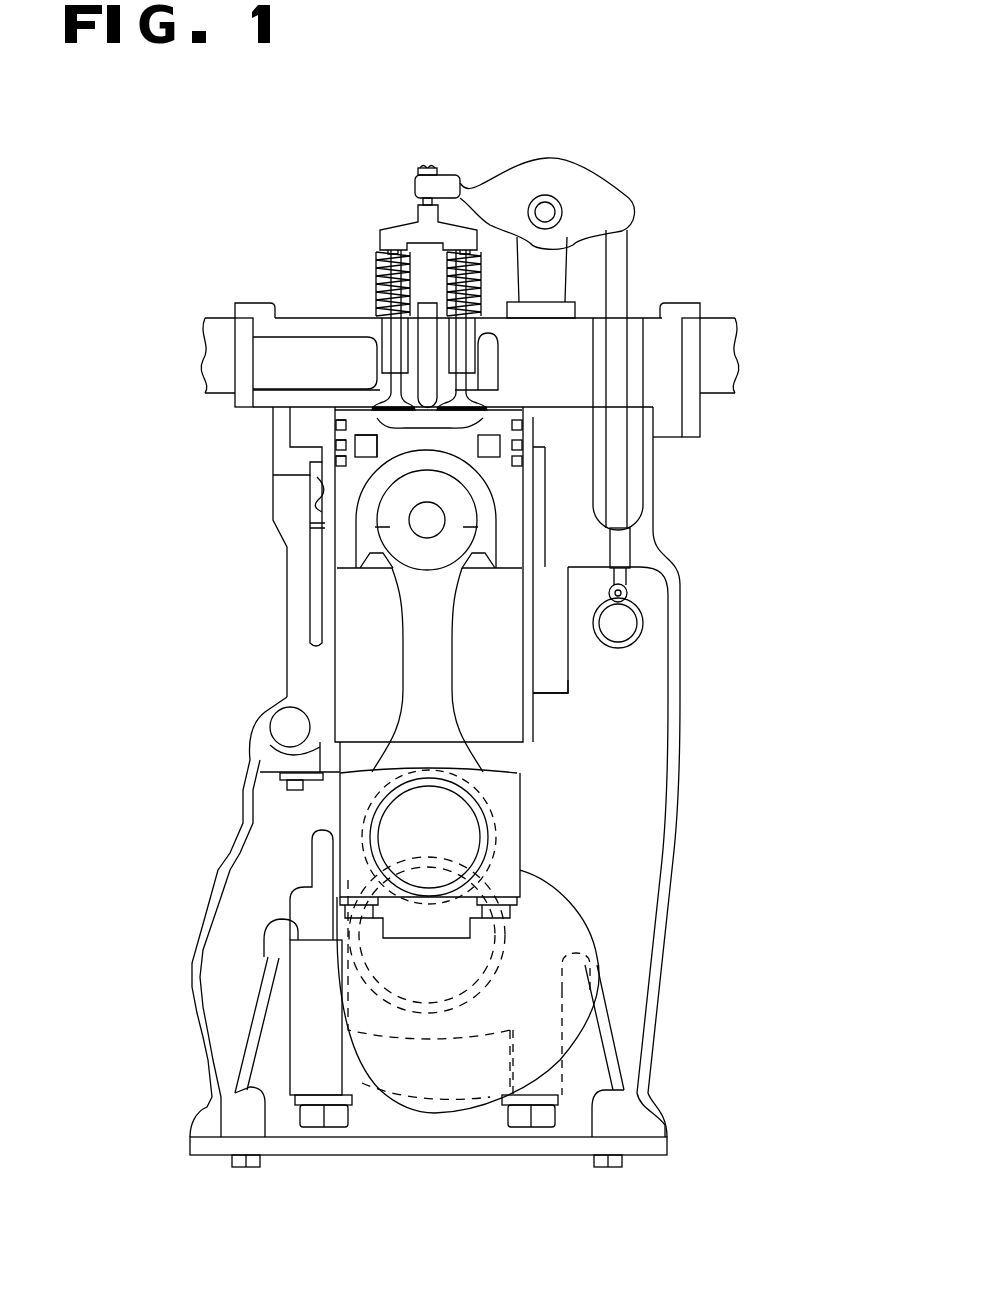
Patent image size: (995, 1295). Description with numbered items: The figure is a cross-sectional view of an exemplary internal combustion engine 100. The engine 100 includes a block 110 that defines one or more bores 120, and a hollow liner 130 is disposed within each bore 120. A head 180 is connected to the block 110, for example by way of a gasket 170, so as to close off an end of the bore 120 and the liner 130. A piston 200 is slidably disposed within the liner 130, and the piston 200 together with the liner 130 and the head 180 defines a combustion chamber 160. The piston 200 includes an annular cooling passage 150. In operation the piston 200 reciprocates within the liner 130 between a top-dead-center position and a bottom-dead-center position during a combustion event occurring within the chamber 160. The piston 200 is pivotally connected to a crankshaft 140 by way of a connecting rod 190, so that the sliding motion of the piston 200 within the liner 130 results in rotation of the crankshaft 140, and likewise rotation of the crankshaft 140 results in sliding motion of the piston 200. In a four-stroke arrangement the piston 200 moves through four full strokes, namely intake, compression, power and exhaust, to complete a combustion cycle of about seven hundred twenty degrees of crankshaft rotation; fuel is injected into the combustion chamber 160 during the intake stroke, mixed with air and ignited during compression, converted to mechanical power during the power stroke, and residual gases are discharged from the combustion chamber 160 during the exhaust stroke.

The internal combustion engine 100 is at (658, 128).
The block 110 is at (599, 554).
The bore 120 is at (530, 683).
The liner 130 is at (544, 777).
The crankshaft 140 is at (446, 838).
The annular cooling passage 150 is at (362, 455).
The combustion chamber 160 is at (375, 417).
The gasket 170 is at (308, 407).
The head 180 is at (566, 369).
The connecting rod 190 is at (446, 658).
The piston 200 is at (446, 444).